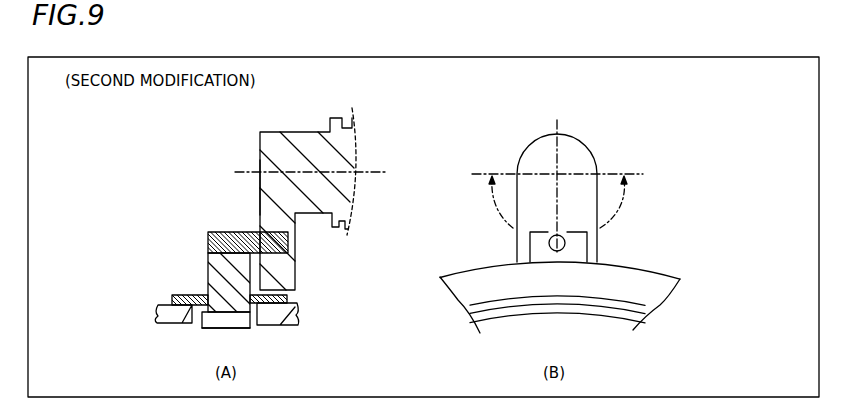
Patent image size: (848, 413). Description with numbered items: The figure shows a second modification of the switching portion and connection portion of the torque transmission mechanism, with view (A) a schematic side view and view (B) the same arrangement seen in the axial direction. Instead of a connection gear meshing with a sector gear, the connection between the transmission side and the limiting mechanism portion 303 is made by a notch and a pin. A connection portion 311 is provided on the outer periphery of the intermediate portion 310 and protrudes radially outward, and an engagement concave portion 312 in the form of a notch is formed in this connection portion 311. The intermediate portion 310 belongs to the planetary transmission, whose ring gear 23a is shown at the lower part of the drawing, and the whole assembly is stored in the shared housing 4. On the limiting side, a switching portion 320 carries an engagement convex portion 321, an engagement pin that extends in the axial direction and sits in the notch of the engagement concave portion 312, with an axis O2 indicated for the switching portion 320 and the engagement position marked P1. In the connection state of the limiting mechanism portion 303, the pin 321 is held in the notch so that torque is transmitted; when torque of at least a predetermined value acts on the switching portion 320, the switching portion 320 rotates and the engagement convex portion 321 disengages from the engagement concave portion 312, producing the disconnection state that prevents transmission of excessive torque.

The limiting mechanism portion 303 is at (181, 169).
The switching portion 320 is at (260, 189).
The engagement convex portion 321 is at (257, 232).
The optical axis O2 is at (365, 172).
The engagement concave portion 312 is at (207, 251).
The connection portion 311 is at (207, 277).
The intermediate portion 310 is at (207, 292).
The housing 4 is at (170, 300).
The ring gear 23a is at (220, 327).
The position P1 is at (204, 244).